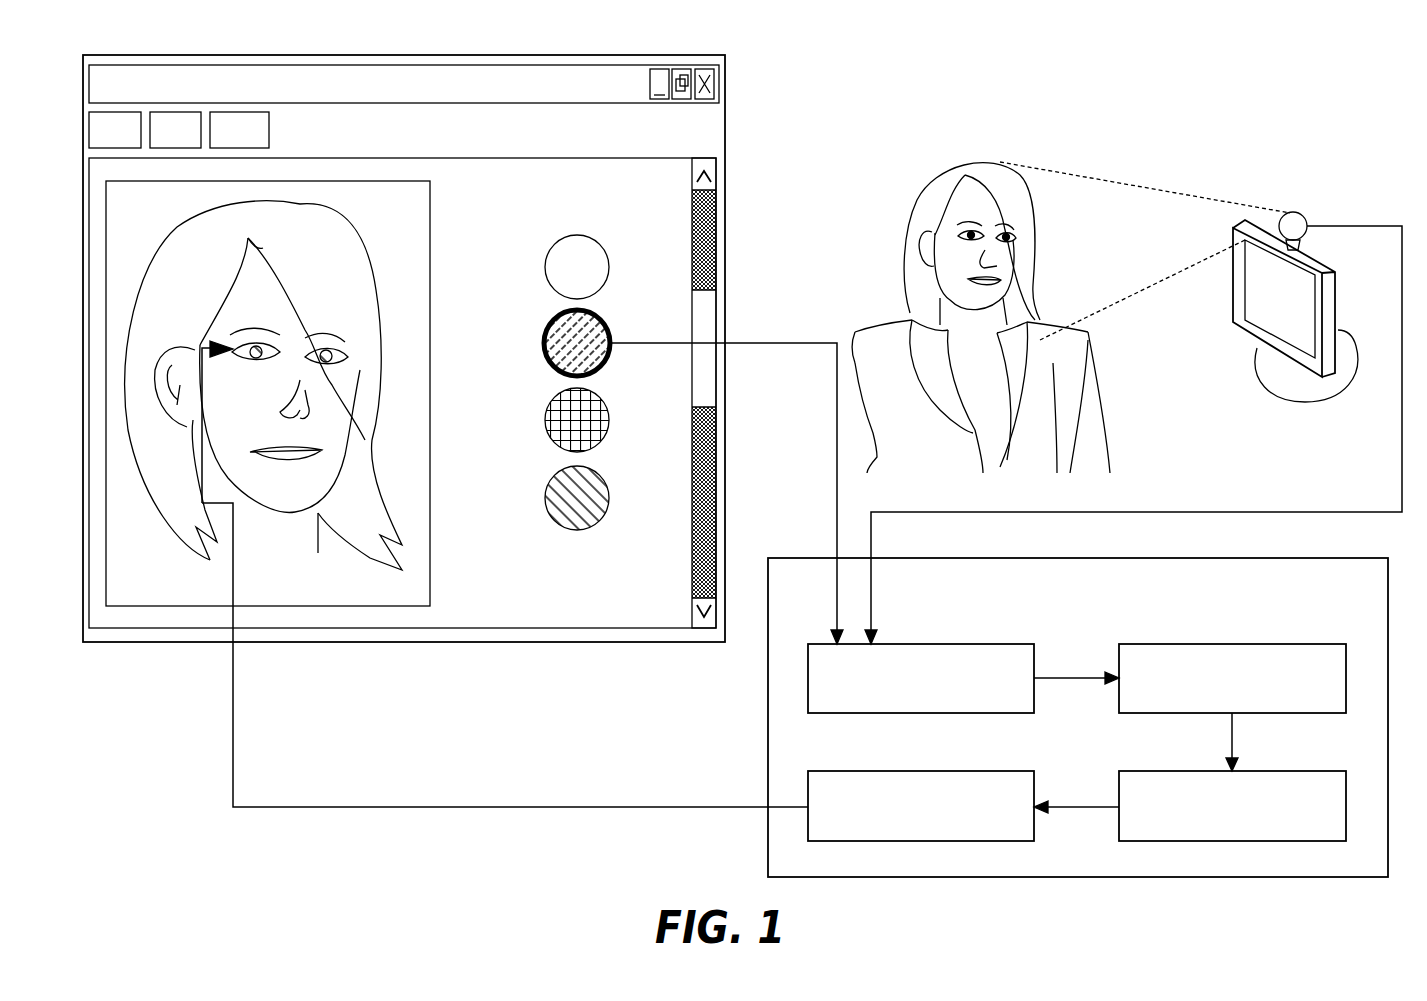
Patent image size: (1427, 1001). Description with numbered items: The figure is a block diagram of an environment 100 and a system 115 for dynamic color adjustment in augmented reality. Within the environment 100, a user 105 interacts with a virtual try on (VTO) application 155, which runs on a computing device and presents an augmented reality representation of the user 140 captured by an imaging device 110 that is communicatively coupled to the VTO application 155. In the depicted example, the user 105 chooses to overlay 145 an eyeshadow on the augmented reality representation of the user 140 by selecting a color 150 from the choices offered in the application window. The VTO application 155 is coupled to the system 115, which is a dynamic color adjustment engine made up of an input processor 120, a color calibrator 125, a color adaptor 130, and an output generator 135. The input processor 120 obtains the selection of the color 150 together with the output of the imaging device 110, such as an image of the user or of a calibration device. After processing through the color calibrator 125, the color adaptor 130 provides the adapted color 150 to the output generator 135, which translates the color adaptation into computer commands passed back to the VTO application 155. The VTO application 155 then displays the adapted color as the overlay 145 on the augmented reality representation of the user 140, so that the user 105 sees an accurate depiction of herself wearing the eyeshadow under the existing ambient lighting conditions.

The environment 100 is at (1320, 48).
The user 105 is at (945, 168).
The imaging device 110 is at (1283, 215).
The system 115 is at (1250, 558).
The input processor 120 is at (1003, 644).
The color calibrator 125 is at (1335, 644).
The color adaptor 130 is at (1335, 771).
The output generator 135 is at (1003, 771).
The augmented reality representation of the user 140 is at (225, 215).
The overlay 145 is at (246, 356).
The color 150 is at (555, 318).
The virtual try on (VTO) application 155 is at (724, 107).